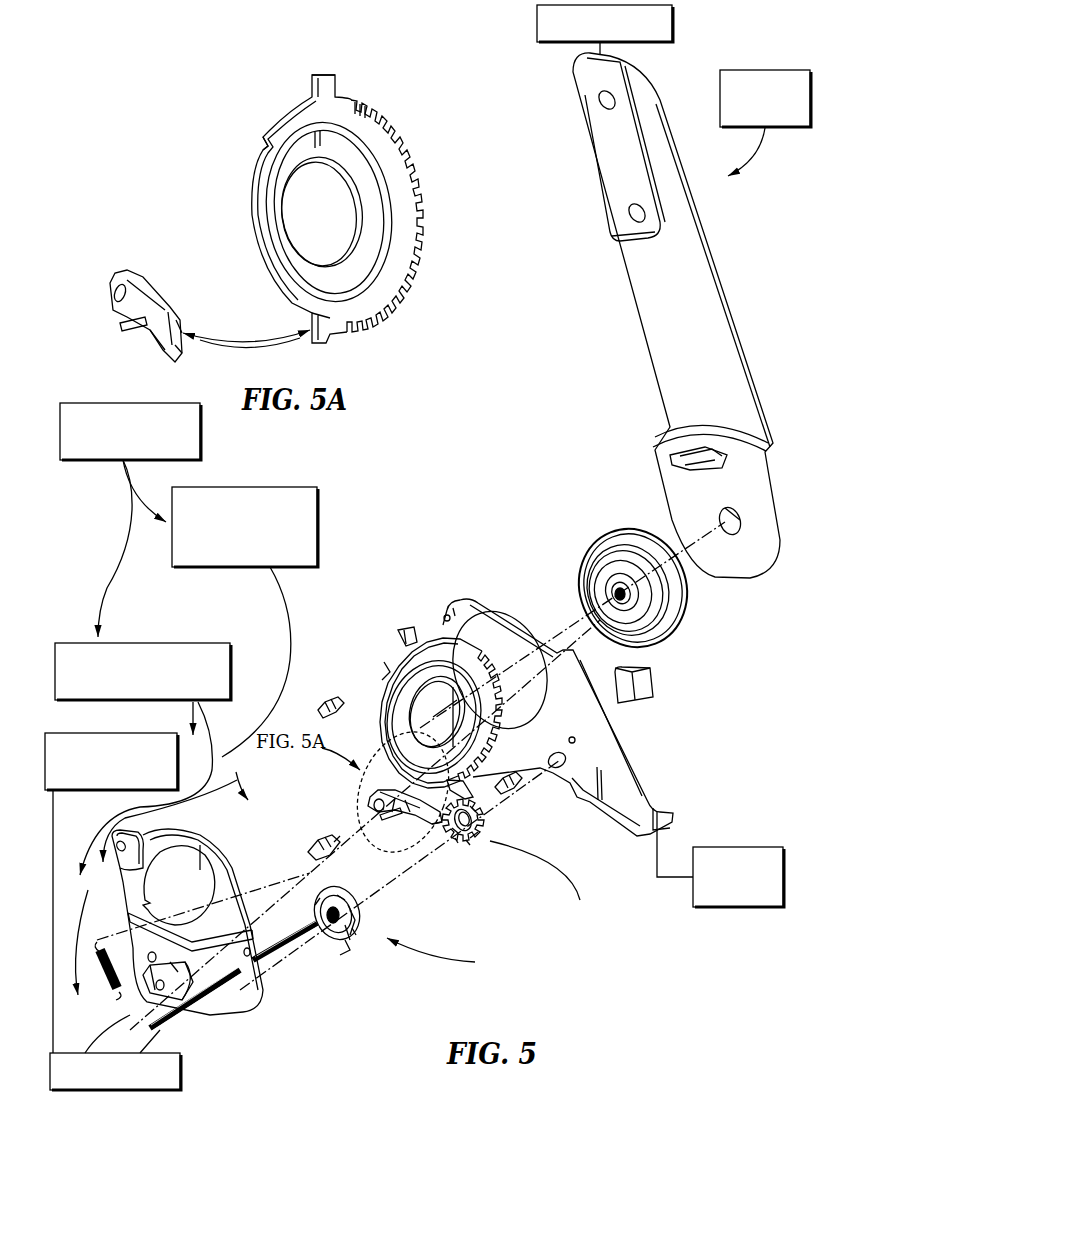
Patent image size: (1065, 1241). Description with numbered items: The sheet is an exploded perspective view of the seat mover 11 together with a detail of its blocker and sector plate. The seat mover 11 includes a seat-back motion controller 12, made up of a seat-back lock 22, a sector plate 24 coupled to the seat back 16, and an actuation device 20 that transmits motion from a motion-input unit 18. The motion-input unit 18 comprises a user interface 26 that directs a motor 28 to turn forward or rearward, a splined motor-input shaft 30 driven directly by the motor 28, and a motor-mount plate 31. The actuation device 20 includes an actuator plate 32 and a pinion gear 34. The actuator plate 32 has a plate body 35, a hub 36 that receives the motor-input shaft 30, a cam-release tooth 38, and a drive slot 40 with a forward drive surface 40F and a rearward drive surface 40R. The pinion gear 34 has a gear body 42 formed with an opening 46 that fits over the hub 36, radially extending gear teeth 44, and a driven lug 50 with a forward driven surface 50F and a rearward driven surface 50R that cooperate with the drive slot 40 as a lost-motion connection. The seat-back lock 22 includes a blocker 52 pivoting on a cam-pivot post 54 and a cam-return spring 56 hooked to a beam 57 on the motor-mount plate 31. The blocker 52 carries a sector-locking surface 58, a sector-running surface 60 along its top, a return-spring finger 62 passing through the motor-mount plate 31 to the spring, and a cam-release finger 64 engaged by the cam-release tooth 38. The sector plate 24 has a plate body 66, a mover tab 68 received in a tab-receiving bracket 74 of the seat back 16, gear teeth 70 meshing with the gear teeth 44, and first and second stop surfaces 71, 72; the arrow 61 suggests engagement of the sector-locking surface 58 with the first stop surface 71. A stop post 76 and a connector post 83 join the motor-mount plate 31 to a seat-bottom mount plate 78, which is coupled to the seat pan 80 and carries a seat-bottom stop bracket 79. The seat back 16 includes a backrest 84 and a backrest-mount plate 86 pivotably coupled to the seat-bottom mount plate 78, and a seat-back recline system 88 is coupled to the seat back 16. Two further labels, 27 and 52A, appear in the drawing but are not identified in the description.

In FIG. 5, the seat mover 11 is at (86, 403).
In FIG. 5, the seat-back motion controller 12 is at (275, 487).
In FIG. 5, the seat back 16 is at (783, 70).
In FIG. 5, the motion-input unit 18 is at (230, 663).
In FIG. 5, the actuation device 20 is at (496, 958).
In FIG. 5, the seat-back lock 22 is at (175, 806).
In FIG. 5A, the sector plate 24 is at (245, 118).
In FIG. 5, the sector plate 24 is at (378, 640).
In FIG. 5, the user interface 26 is at (180, 780).
In FIG. 5, the motor control line 27 is at (75, 939).
In FIG. 5, the motor 28 is at (125, 1014).
In FIG. 5, the motor-input shaft 30 is at (272, 964).
In FIG. 5, the motor-mount plate 31 is at (255, 1000).
In FIG. 5, the actuator plate 32 is at (442, 953).
In FIG. 5, the pinion gear 34 is at (640, 952).
In FIG. 5, the plate body 35 is at (348, 946).
In FIG. 5, the hub 36 is at (283, 948).
In FIG. 5, the cam-release tooth 38 is at (306, 892).
In FIG. 5, the drive slot 40 is at (364, 905).
In FIG. 5, the forward drive surface 40F is at (380, 925).
In FIG. 5, the rearward drive surface 40R is at (350, 884).
In FIG. 5, the gear body 42 is at (455, 849).
In FIG. 5, the gear teeth 44 is at (470, 857).
In FIG. 5, the opening 46 is at (448, 836).
In FIG. 5, the driven lug 50 is at (486, 830).
In FIG. 5, the forward driven surface 50F is at (481, 848).
In FIG. 5, the rearward driven surface 50R is at (490, 814).
In FIG. 5A, the blocker 52 is at (118, 268).
In FIG. 5, the blocker 52 is at (350, 797).
In FIG. 5, the pawl pivot pin 52A is at (335, 838).
In FIG. 5, the cam-pivot post 54 is at (312, 838).
In FIG. 5, the cam-return spring 56 is at (100, 866).
In FIG. 5, the beam 57 is at (152, 908).
In FIG. 5A, the sector-locking surface 58 is at (184, 327).
In FIG. 5, the sector-locking surface 58 is at (410, 797).
In FIG. 5A, the sector-running surface 60 is at (150, 300).
In FIG. 5, the sector-running surface 60 is at (372, 795).
In FIG. 5A, the arrow 61 is at (245, 342).
In FIG. 5A, the return-spring finger 62 is at (130, 328).
In FIG. 5, the return-spring finger 62 is at (398, 822).
In FIG. 5A, the cam-release finger 64 is at (165, 352).
In FIG. 5, the cam-release finger 64 is at (425, 832).
In FIG. 5A, the plate body 66 is at (272, 190).
In FIG. 5, the plate body 66 is at (403, 718).
In FIG. 5A, the mover tab 68 is at (336, 78).
In FIG. 5, the mover tab 68 is at (413, 632).
In FIG. 5A, the gear teeth 70 is at (428, 152).
In FIG. 5, the gear teeth 70 is at (483, 680).
In FIG. 5A, the first stop surface 71 is at (318, 345).
In FIG. 5, the first stop surface 71 is at (448, 790).
In FIG. 5A, the second stop surface 72 is at (264, 148).
In FIG. 5, the second stop surface 72 is at (382, 680).
In FIG. 5, the tab-receiving bracket 74 is at (718, 440).
In FIG. 5, the stop post 76 is at (328, 694).
In FIG. 5, the seat-bottom mount plate 78 is at (645, 750).
In FIG. 5, the seat-bottom stop bracket 79 is at (660, 685).
In FIG. 5, the seat pan 80 is at (745, 847).
In FIG. 5, the connector post 83 is at (514, 778).
In FIG. 5, the backrest 84 is at (675, 135).
In FIG. 5, the backrest-mount plate 86 is at (712, 240).
In FIG. 5, the seat-back recline system 88 is at (598, 522).